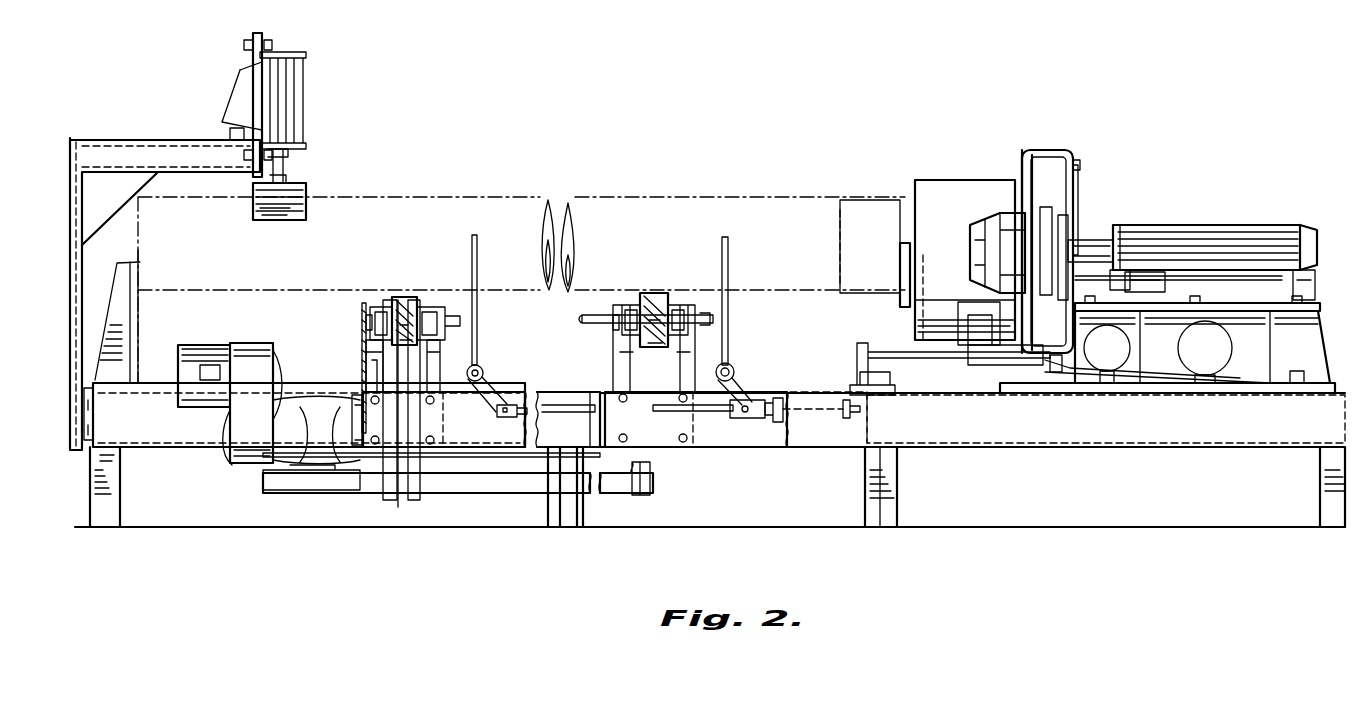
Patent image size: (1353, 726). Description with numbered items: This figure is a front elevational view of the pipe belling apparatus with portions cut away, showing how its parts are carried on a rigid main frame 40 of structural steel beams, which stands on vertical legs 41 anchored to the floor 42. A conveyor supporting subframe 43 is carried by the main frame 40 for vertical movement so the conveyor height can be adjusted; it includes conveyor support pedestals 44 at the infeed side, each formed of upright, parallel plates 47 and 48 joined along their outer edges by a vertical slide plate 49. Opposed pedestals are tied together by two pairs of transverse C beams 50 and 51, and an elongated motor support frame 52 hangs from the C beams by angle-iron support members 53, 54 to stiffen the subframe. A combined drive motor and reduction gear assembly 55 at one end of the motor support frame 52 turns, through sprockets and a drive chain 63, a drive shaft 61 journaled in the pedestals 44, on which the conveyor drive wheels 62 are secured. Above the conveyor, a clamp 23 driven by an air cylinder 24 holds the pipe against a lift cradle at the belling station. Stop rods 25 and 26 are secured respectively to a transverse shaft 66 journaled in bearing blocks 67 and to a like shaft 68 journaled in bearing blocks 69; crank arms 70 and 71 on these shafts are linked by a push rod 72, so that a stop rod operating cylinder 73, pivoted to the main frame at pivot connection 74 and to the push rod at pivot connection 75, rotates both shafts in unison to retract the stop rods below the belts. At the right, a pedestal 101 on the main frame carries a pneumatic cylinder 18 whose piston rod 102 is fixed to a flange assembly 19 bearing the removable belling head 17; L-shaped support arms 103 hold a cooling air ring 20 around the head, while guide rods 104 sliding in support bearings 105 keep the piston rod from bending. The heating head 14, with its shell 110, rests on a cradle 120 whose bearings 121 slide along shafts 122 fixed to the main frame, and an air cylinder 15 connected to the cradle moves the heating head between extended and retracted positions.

The heating head 14 is at (932, 180).
The air cylinder 15 is at (1068, 375).
The belling head 17 is at (995, 212).
The pneumatic cylinder 18 is at (1275, 225).
The flange assembly 19 is at (1070, 232).
The cooling air ring 20 is at (1032, 150).
The clamp 23 is at (267, 222).
The air cylinder 24 is at (310, 90).
The stop rod 25 is at (480, 242).
The stop rod 26 is at (730, 242).
The main frame 40 is at (1137, 449).
The vertical legs 41 is at (890, 470).
The floor 42 is at (945, 527).
The conveyor supporting subframe 43 is at (482, 495).
The conveyor support pedestals 44 is at (358, 330).
The upright plate 47 is at (380, 305).
The upright plate 48 is at (424, 305).
The vertical slide plate 49 is at (440, 345).
The transversely extending C beam 50 is at (383, 368).
The transversely extending C beam 51 is at (440, 395).
The motor support frame 52 is at (438, 485).
The support member 53 is at (392, 490).
The support member 54 is at (425, 462).
The drive motor-reduction gear assembly 55 is at (243, 468).
The drive shaft 61 is at (602, 315).
The conveyor drive wheels 62 is at (402, 297).
The drive chain 63 is at (355, 320).
The shaft 66 is at (485, 366).
The bearing blocks 67 is at (483, 400).
The shaft 68 is at (728, 363).
The bearing blocks 69 is at (731, 368).
The crank arm 70 is at (503, 398).
The crank arm 71 is at (745, 392).
The push rod 72 is at (707, 410).
The stop rod operating cylinder 73 is at (785, 412).
The pivot connection 74 is at (862, 410).
The pivot connection 75 is at (760, 418).
The pedestal 101 is at (1312, 330).
The piston rod 102 is at (1108, 240).
The L-shaped support arms 103 is at (1078, 165).
The guide rods 104 is at (1236, 278).
The support bearings 105 is at (1165, 287).
The shell 110 is at (985, 185).
The cradle 120 is at (960, 302).
The bearings 121 is at (1000, 365).
The shafts 122 is at (922, 358).